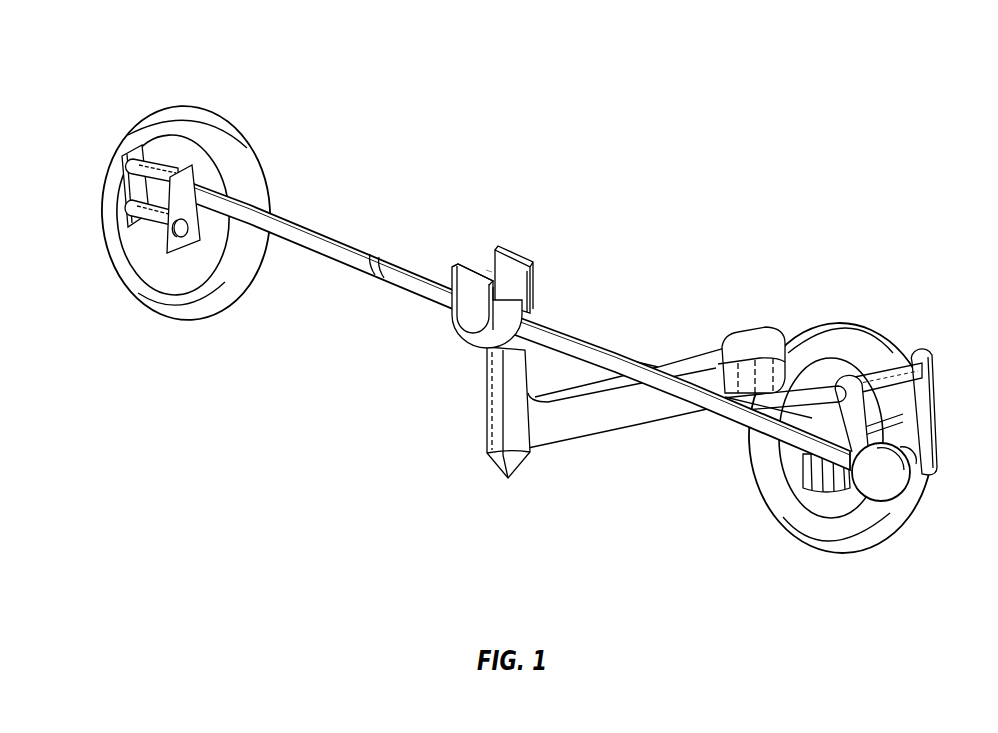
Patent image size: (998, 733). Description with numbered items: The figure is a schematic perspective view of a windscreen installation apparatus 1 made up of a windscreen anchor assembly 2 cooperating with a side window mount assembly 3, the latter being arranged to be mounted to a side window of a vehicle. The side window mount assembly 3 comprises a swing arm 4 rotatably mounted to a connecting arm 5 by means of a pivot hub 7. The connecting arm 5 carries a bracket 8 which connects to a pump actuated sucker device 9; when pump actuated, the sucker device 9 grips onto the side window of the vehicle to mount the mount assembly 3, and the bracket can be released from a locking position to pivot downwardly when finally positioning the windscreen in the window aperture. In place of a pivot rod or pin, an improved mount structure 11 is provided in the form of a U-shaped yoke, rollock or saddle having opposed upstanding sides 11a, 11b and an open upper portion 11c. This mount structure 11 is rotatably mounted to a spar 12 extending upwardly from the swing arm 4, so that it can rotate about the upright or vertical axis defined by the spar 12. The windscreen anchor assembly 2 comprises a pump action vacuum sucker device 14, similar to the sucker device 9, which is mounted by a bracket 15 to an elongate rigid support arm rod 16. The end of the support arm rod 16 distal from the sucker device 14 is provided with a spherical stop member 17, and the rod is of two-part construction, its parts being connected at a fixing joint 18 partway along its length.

The windscreen installation apparatus 1 is at (168, 78).
The windscreen anchor assembly 2 is at (280, 254).
The side window mount assembly 3 is at (776, 546).
The swing arm 4 is at (593, 418).
The connecting arm 5 is at (832, 385).
The pivot hub 7 is at (752, 342).
The bracket 8 is at (922, 402).
The pump actuated sucker device 9 is at (847, 363).
The mount structure 11 is at (518, 252).
The upstanding side 11a is at (452, 265).
The upstanding side 11b is at (497, 247).
The open upper portion 11c is at (485, 268).
The spar 12 is at (502, 393).
The pump action vacuum sucker device 14 is at (243, 166).
The bracket 15 is at (130, 187).
The support arm rod 16 is at (316, 240).
The spherical stop member 17 is at (890, 482).
The fixing joint 18 is at (377, 257).